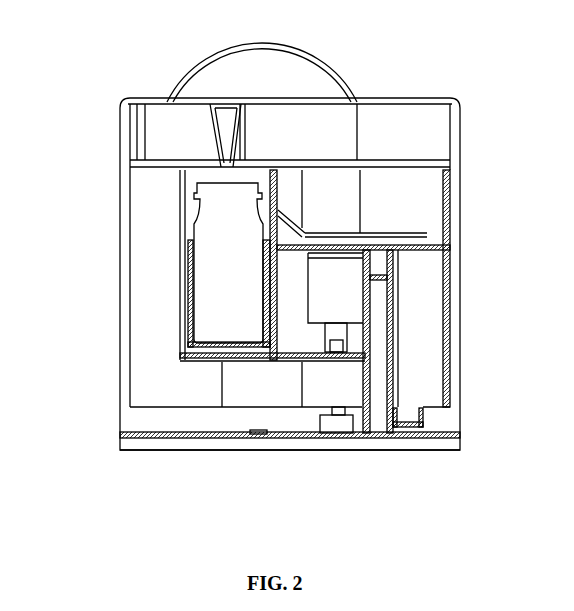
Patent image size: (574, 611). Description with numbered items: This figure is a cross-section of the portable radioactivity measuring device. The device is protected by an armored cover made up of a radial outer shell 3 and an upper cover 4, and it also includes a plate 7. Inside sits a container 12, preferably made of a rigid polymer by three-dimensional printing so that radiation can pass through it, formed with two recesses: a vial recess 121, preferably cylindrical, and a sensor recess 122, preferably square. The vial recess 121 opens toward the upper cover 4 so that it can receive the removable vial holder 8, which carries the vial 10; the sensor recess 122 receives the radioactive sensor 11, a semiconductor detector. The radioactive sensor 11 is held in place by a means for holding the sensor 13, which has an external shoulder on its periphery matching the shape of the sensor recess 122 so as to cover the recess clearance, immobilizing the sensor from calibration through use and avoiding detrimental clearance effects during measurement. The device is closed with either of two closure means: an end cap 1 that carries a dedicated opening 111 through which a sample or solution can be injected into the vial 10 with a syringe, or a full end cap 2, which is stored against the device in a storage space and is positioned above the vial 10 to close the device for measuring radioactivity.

The end cap 1 is at (137, 130).
The full end cap 2 is at (300, 72).
The radial outer shell 3 is at (152, 422).
The upper cover 4 is at (405, 140).
The plate 7 is at (443, 445).
The removable vial holder 8 is at (180, 288).
The vial 10 is at (217, 253).
The radioactive sensor 11 is at (400, 287).
The container 12 is at (300, 343).
The means for holding the sensor 13 is at (400, 212).
The opening 111 is at (213, 118).
The vial recess 121 is at (188, 203).
The sensor recess 122 is at (430, 238).